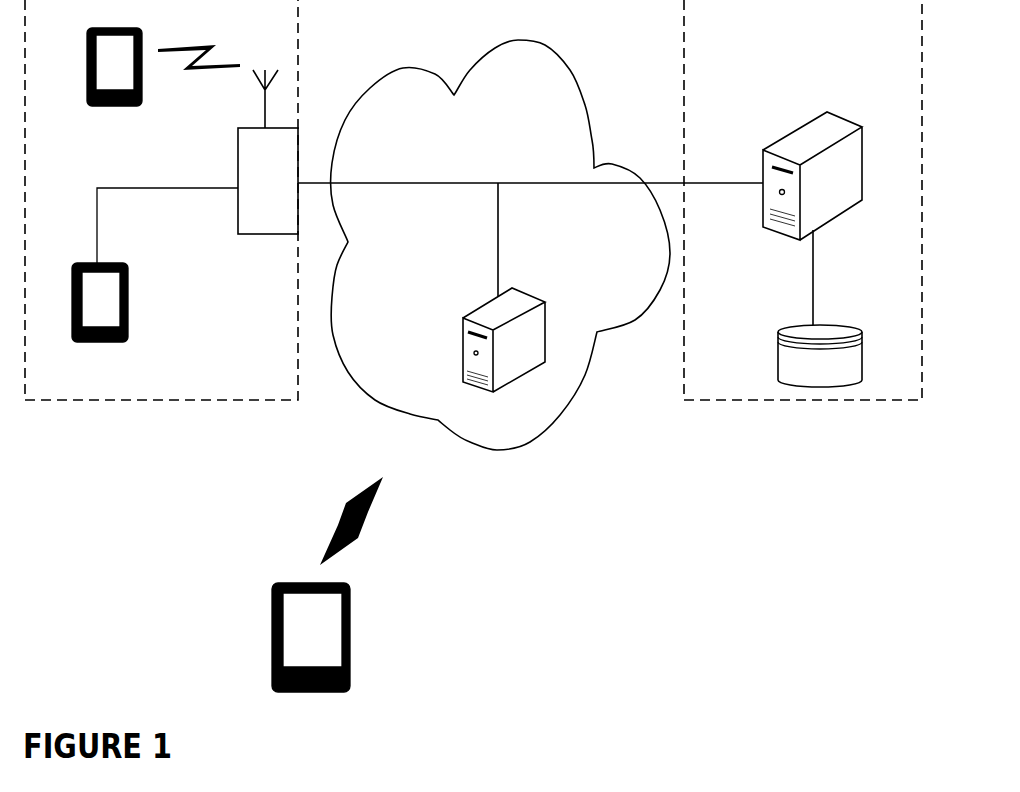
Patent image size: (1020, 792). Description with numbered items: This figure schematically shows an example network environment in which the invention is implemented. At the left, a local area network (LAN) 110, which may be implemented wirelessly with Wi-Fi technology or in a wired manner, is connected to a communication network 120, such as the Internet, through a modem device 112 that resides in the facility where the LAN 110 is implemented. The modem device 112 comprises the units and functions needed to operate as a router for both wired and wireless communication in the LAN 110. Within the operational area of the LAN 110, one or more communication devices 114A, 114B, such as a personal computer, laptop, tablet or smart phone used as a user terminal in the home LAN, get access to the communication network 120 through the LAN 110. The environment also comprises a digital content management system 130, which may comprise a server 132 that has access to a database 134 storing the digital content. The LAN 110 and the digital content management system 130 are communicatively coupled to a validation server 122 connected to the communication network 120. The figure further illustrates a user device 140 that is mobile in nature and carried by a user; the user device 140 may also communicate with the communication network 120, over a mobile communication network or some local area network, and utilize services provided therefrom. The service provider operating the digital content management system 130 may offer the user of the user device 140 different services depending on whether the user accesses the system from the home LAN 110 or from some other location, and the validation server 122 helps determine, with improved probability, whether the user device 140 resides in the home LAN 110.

The local area network (LAN) 110 is at (153, 400).
The modem device 112 is at (260, 234).
The communication device 114A is at (128, 298).
The communication device 114B is at (127, 106).
The communication network 120 is at (572, 410).
The validation server 122 is at (463, 320).
The digital content management system 130 is at (773, 400).
The server 132 is at (828, 112).
The database 134 is at (825, 322).
The user device 140 is at (350, 640).